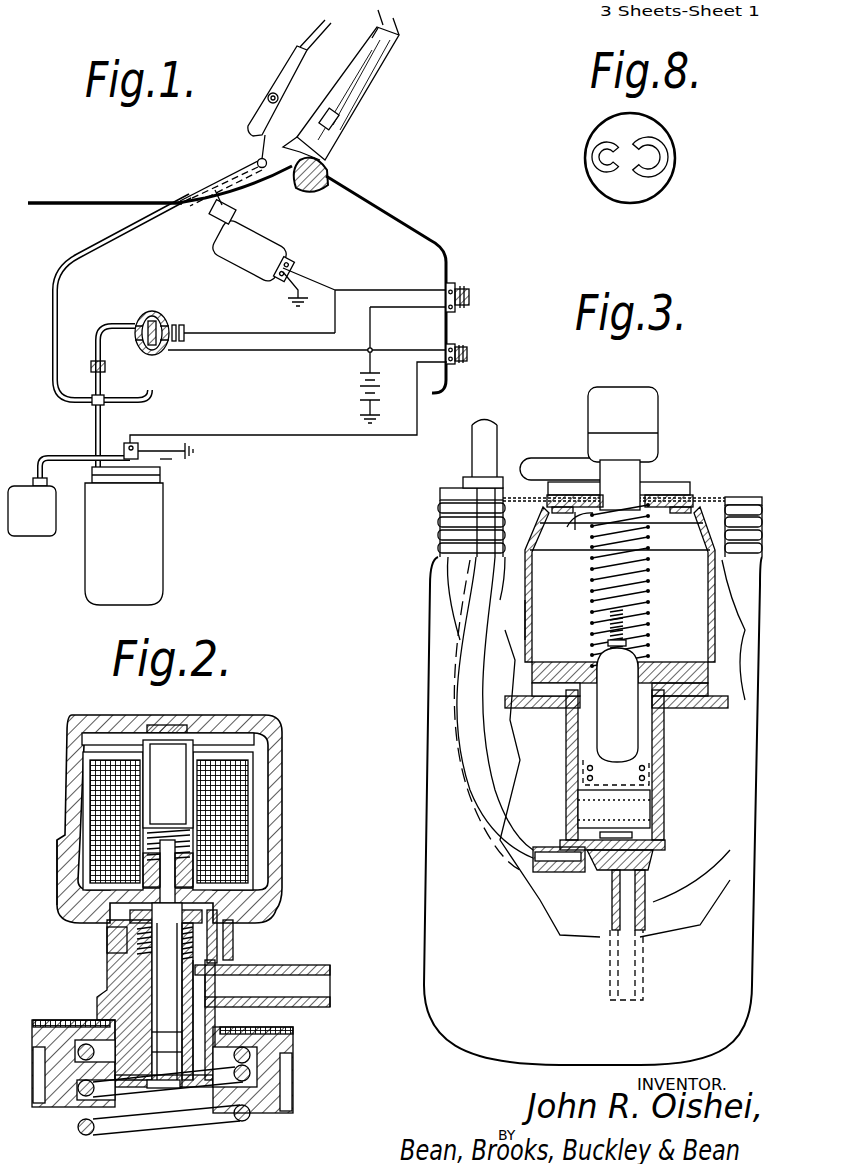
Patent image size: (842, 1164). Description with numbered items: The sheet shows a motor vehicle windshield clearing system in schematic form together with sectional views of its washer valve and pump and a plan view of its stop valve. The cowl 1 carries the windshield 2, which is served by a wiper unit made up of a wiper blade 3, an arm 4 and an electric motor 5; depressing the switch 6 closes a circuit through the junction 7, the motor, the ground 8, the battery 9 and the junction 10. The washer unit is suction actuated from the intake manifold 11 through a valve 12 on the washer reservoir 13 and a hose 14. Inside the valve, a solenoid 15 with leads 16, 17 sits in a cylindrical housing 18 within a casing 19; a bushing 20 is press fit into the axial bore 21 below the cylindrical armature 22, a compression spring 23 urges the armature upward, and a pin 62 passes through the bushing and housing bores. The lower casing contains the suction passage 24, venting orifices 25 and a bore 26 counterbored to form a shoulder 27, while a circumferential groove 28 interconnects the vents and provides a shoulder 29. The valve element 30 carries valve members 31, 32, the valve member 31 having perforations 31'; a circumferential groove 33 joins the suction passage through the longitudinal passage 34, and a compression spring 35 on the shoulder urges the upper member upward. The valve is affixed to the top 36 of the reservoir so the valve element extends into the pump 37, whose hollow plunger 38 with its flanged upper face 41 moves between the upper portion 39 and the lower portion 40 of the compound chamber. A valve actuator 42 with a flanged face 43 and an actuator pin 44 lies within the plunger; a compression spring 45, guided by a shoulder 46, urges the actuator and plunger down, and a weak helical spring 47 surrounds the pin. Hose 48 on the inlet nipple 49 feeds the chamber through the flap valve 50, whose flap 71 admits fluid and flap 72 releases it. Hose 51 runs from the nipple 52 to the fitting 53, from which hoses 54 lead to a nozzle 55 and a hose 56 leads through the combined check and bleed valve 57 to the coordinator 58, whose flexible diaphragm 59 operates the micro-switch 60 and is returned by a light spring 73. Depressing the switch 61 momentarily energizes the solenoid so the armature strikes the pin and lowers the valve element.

In FIG. 1, the cowl 1 is at (126, 203).
In FIG. 1, the windshield 2 is at (338, 143).
In FIG. 1, the wiper blade 3 is at (365, 57).
In FIG. 1, the arm 4 is at (283, 78).
In FIG. 1, the electric motor 5 is at (268, 250).
In FIG. 1, the switch 6 is at (468, 292).
In FIG. 1, the junction 7 is at (336, 290).
In FIG. 1, the ground 8 is at (286, 303).
In FIG. 1, the battery 9 is at (381, 375).
In FIG. 1, the junction 10 is at (372, 350).
In FIG. 1, the intake manifold 11 is at (38, 520).
In FIG. 1, the valve 12 is at (140, 447).
In FIG. 3, the valve 12 is at (590, 397).
In FIG. 2, the valve 12 is at (282, 750).
In FIG. 1, the washer reservoir 13 is at (148, 550).
In FIG. 3, the washer reservoir 13 is at (420, 584).
In FIG. 1, the hose 14 is at (48, 456).
In FIG. 3, the hose 14 is at (553, 466).
In FIG. 2, the solenoid 15 is at (107, 752).
In FIG. 1, the lead 16 is at (270, 435).
In FIG. 1, the lead 17 is at (170, 455).
In FIG. 2, the cylindrical housing 18 is at (88, 766).
In FIG. 2, the casing 19 is at (63, 775).
In FIG. 2, the bushing 20 is at (180, 820).
In FIG. 2, the axial bore 21 is at (138, 778).
In FIG. 2, the cylindrical armature 22 is at (190, 752).
In FIG. 2, the compression spring 23 is at (187, 832).
In FIG. 2, the suction passage 24 is at (318, 987).
In FIG. 2, the venting orifices 25 is at (233, 945).
In FIG. 2, the bore 26 is at (146, 990).
In FIG. 2, the shoulder 27 is at (170, 995).
In FIG. 2, the circumferential groove 28 is at (117, 957).
In FIG. 2, the shoulder 29 is at (127, 943).
In FIG. 3, the valve element 30 is at (630, 500).
In FIG. 2, the valve element 30 is at (170, 1022).
In FIG. 2, the valve member 31 is at (170, 1040).
In FIG. 2, the perforations 31' is at (164, 1066).
In FIG. 2, the valve member 32 is at (130, 917).
In FIG. 2, the circumferential groove 33 is at (90, 1018).
In FIG. 2, the longitudinal passage 34 is at (200, 1017).
In FIG. 2, the compression spring 35 is at (190, 955).
In FIG. 3, the top 36 is at (438, 606).
In FIG. 3, the pump 37 is at (547, 596).
In FIG. 3, the hollow plunger 38 is at (570, 732).
In FIG. 3, the upper portion 39 is at (537, 608).
In FIG. 3, the lower portion 40 is at (637, 832).
In FIG. 3, the flanged upper face 41 is at (557, 663).
In FIG. 3, the valve actuator 42 is at (620, 738).
In FIG. 3, the flanged face 43 is at (647, 785).
In FIG. 3, the actuator pin 44 is at (640, 637).
In FIG. 3, the compression spring 45 is at (648, 555).
In FIG. 2, the compression spring 45 is at (170, 1118).
In FIG. 3, the shoulder 46 is at (570, 533).
In FIG. 2, the shoulder 46 is at (242, 1118).
In FIG. 3, the helical spring 47 is at (627, 615).
In FIG. 3, the hose 48 is at (653, 902).
In FIG. 3, the inlet nipple 49 is at (630, 880).
In FIG. 8, the flap valve 50 is at (664, 131).
In FIG. 3, the flap valve 50 is at (660, 847).
In FIG. 1, the hose 51 is at (96, 424).
In FIG. 3, the hose 51 is at (480, 430).
In FIG. 3, the nipple 52 is at (550, 867).
In FIG. 1, the fitting 53 is at (93, 397).
In FIG. 1, the hoses 54 is at (68, 262).
In FIG. 1, the nozzle 55 is at (258, 162).
In FIG. 1, the hose 56 is at (105, 384).
In FIG. 1, the combined check and bleed valve 57 is at (93, 362).
In FIG. 1, the coordinator 58 is at (145, 313).
In FIG. 1, the flexible diaphragm 59 is at (158, 315).
In FIG. 1, the micro-switch 60 is at (180, 324).
In FIG. 1, the switch 61 is at (467, 353).
In FIG. 2, the pin 62 is at (163, 938).
In FIG. 8, the flap 71 is at (652, 158).
In FIG. 3, the flap 71 is at (610, 867).
In FIG. 8, the flap 72 is at (596, 156).
In FIG. 3, the flap 72 is at (597, 863).
In FIG. 1, the light spring 73 is at (170, 348).